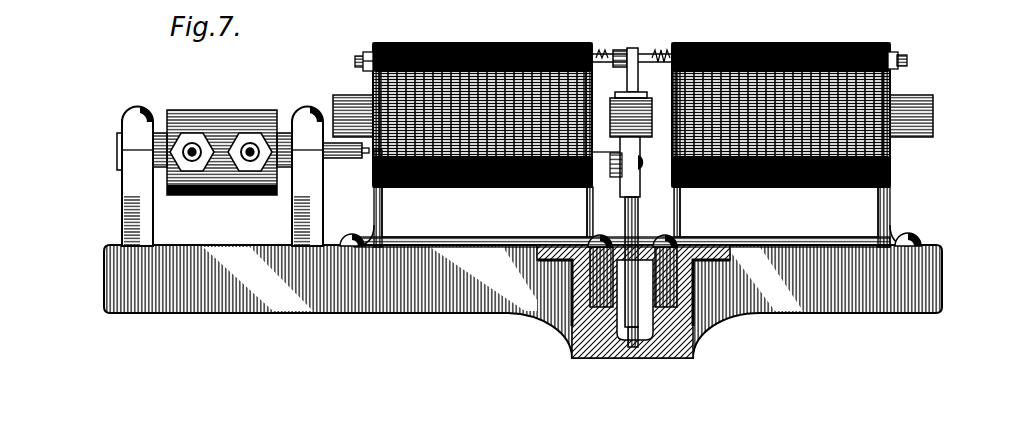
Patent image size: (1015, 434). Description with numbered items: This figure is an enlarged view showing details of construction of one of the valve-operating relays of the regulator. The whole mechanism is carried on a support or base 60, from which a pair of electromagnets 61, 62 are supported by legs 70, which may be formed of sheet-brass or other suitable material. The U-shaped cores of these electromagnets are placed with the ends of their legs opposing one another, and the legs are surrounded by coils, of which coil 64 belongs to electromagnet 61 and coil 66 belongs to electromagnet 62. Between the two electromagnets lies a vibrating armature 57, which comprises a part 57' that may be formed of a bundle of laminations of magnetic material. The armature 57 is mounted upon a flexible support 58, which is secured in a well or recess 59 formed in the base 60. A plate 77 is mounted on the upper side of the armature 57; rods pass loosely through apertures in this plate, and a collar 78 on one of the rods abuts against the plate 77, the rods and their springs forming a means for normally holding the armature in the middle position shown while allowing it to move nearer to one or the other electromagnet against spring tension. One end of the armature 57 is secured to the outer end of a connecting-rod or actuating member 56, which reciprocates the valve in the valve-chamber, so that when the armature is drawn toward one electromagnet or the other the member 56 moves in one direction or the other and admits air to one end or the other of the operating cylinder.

The connecting-rod or actuating member 56 is at (366, 158).
The vibrating armature 57 is at (633, 242).
The armature part 57' is at (642, 100).
The flexible support 58 is at (637, 311).
The well or recess 59 is at (657, 318).
The support or base 60 is at (930, 276).
The electromagnet 61 is at (345, 100).
The electromagnet 62 is at (918, 105).
The coil 64 is at (522, 46).
The coil 66 is at (775, 46).
The legs 70 is at (374, 208).
The plate 77 is at (633, 48).
The collar 78 is at (618, 50).